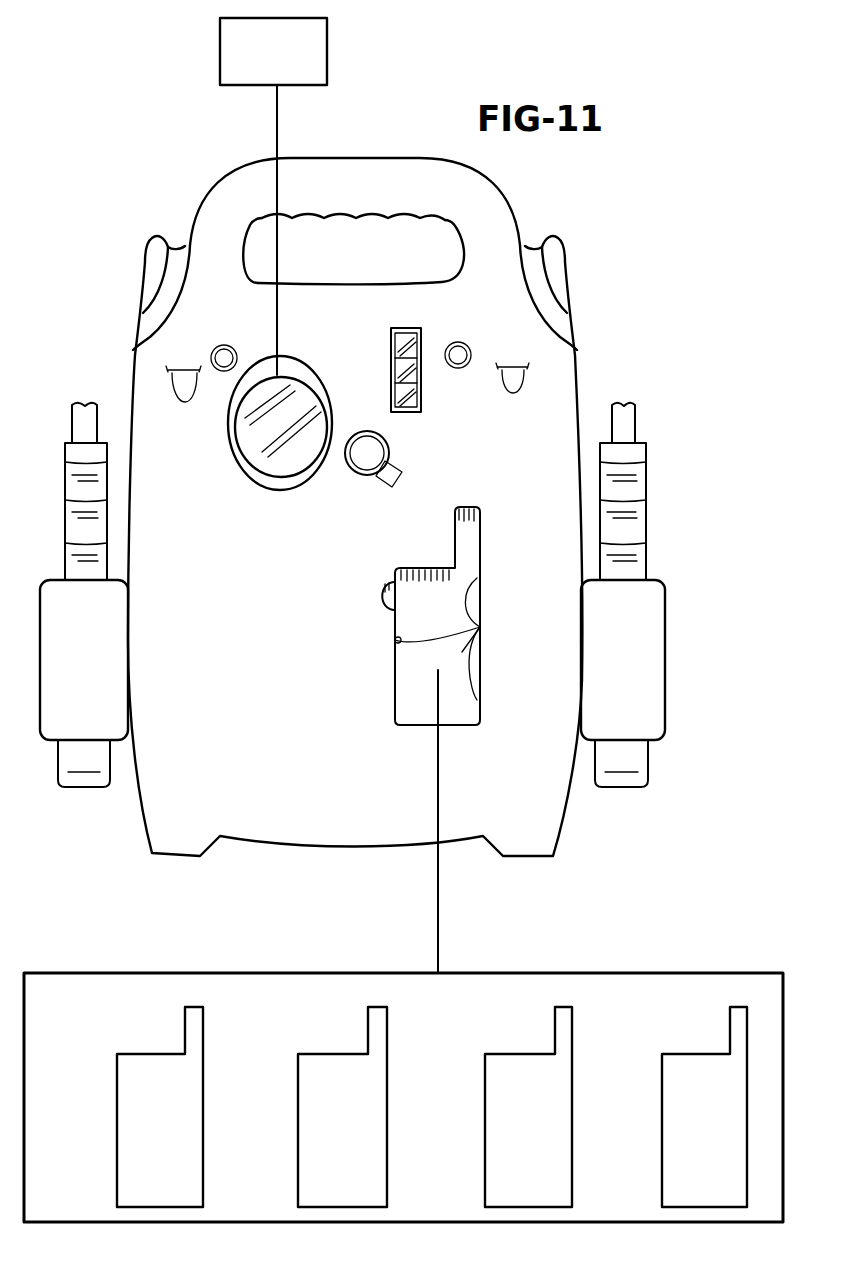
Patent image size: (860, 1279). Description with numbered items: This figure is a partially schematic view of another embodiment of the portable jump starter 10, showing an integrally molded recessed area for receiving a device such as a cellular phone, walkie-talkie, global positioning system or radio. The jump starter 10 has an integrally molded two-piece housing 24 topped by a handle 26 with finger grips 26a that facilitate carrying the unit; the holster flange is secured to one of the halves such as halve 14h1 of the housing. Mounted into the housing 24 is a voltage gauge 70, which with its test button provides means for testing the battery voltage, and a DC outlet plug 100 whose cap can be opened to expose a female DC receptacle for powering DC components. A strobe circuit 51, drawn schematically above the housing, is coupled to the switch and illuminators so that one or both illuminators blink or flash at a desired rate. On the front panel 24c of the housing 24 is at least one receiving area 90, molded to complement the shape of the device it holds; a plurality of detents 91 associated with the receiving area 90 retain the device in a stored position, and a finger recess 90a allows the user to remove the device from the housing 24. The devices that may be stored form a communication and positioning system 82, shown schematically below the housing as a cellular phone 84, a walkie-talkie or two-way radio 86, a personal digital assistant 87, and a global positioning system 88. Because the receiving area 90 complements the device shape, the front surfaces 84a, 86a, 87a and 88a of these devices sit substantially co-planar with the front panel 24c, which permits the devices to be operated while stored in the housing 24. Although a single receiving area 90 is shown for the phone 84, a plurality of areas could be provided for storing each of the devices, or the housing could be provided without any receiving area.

The portable jump starter 10 is at (593, 278).
The housing 24 is at (523, 417).
The front panel 24c is at (357, 537).
The handle 26 is at (353, 189).
The handle grip 26a is at (378, 216).
The strobe circuit 51 is at (328, 50).
The voltage gauge 70 is at (422, 338).
The DC outlet plug 100 is at (390, 449).
The receiving area 90 is at (409, 616).
The finger recess 90a is at (382, 588).
The detents 91 is at (496, 633).
The housing half 14h1 is at (360, 798).
The communication and positioning system 82 is at (163, 972).
The cellular phone 84 is at (135, 1052).
The front surface of cellular phone 84a is at (125, 1094).
The two-way radio 86 is at (321, 1052).
The front surface of two-way radio 86a is at (306, 1094).
The personal digital assistant 87 is at (506, 1052).
The front surface of PDA 87a is at (496, 1094).
The global positioning system 88 is at (677, 1052).
The front surface of GPS 88a is at (682, 1094).